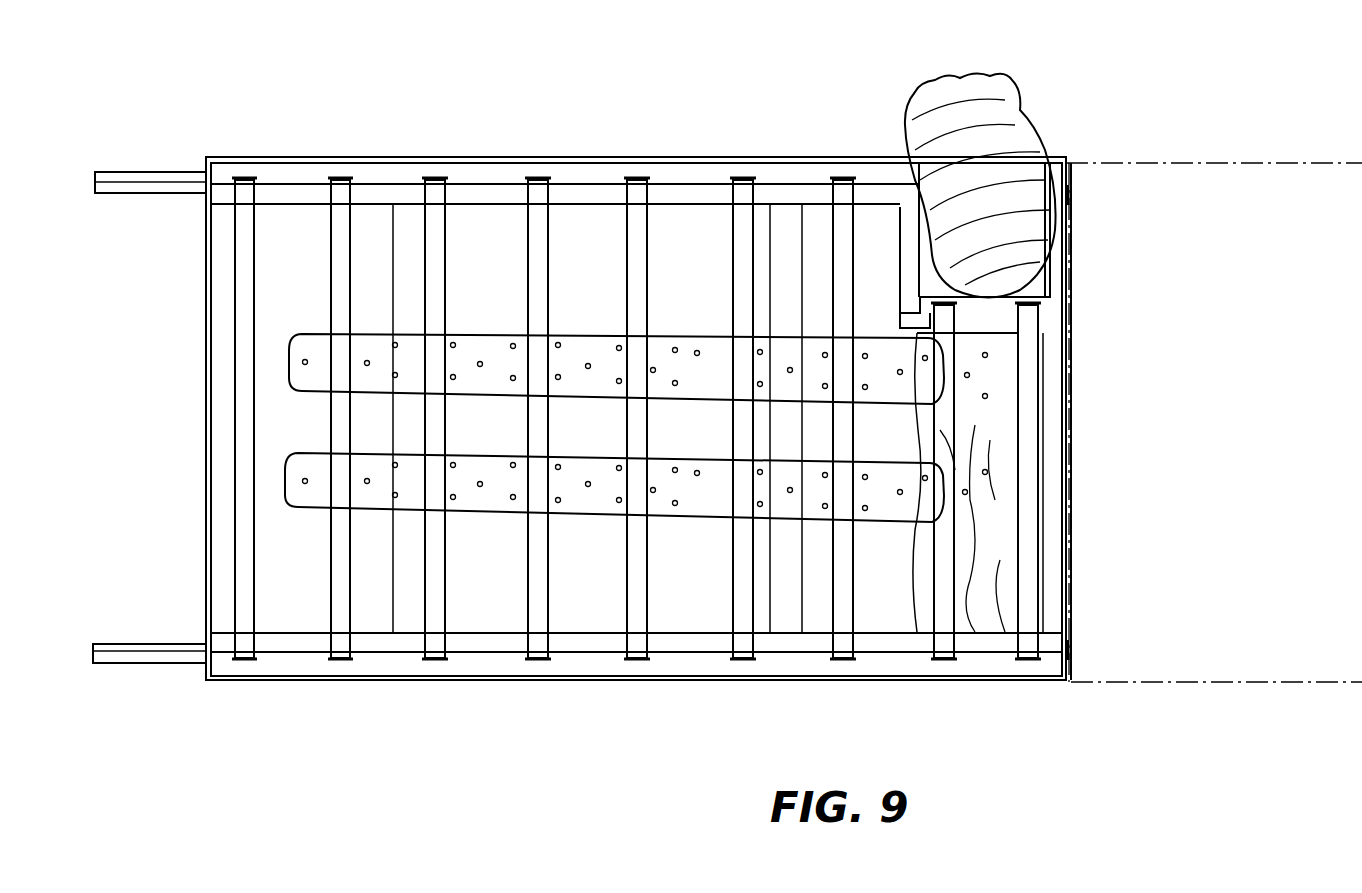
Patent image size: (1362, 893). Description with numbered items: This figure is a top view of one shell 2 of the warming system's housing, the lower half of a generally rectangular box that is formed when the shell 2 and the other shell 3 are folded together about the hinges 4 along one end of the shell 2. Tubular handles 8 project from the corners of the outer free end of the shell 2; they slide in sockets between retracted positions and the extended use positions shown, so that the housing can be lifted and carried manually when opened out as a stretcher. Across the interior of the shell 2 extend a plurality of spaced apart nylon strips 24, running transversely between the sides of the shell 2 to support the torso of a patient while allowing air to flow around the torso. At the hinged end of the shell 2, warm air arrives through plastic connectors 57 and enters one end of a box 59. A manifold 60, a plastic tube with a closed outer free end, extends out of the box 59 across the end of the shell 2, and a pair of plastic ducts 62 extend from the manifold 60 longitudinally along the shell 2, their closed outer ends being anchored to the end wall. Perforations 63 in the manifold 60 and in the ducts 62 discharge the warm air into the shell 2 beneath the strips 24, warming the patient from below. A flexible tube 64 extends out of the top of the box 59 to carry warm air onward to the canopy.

The shell 2 is at (530, 680).
The shell 3 is at (1270, 160).
The hinges 4 is at (1073, 196).
The tubular handles 8 is at (147, 177).
The strips 24 is at (440, 186).
The plastic connectors 57 is at (1075, 258).
The box 59 is at (928, 272).
The manifold 60 is at (988, 493).
The ducts 62 is at (586, 380).
The perforations 63 is at (588, 364).
The flexible tube 64 is at (1000, 112).